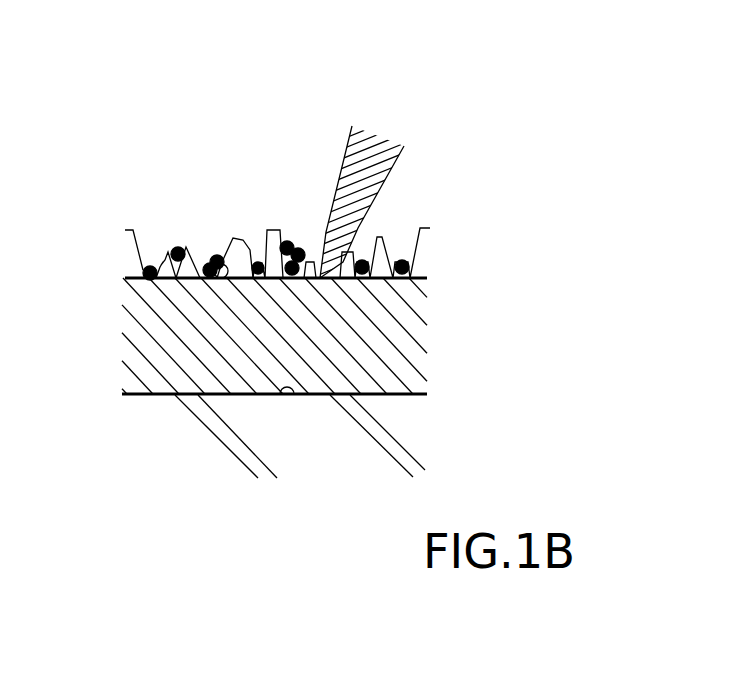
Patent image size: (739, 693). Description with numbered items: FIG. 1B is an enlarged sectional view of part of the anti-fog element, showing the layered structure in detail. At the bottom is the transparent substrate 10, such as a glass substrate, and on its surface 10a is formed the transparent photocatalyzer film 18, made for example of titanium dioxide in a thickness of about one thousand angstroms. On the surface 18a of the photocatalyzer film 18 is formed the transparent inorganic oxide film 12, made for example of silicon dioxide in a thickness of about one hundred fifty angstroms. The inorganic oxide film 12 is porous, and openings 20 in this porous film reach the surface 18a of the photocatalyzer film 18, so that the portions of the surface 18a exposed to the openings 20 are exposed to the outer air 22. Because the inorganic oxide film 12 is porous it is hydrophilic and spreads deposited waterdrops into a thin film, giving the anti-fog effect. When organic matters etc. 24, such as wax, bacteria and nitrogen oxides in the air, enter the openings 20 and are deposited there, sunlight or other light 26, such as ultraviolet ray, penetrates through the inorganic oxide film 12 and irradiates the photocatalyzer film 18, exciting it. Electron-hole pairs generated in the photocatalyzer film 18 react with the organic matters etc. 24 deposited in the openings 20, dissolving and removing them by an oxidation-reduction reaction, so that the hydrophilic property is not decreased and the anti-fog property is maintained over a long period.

The transparent substrate 10 is at (412, 416).
The surface of the transparent substrate 10a is at (296, 395).
The transparent inorganic oxide film 12 is at (423, 258).
The transparent photocatalyzer film 18 is at (422, 303).
The surface of the photocatalyzer film 18a is at (228, 279).
The openings 20 is at (206, 240).
The outer air 22 is at (490, 170).
The organic matters etc. 24 is at (287, 240).
The sunlight or other light 26 is at (390, 143).